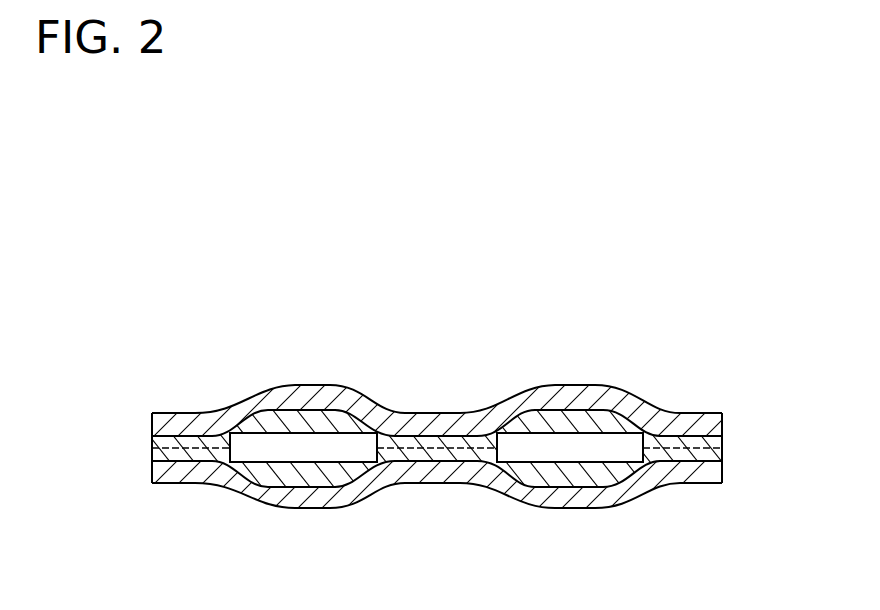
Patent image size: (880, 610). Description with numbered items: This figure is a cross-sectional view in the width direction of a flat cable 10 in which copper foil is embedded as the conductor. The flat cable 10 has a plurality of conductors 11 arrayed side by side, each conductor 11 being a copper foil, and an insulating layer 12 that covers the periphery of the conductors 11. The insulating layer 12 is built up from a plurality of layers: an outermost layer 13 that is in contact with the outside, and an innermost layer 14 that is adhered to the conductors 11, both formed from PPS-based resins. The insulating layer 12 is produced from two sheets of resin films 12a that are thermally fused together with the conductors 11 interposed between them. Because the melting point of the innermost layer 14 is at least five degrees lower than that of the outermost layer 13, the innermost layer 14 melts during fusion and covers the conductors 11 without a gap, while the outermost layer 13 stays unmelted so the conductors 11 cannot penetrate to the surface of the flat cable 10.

The flat cable 10 is at (679, 360).
The conductor 11 is at (267, 455).
The insulating layer 12 is at (713, 472).
The resin film 12a is at (150, 482).
The outermost layer 13 is at (357, 402).
The innermost layer 14 is at (313, 478).